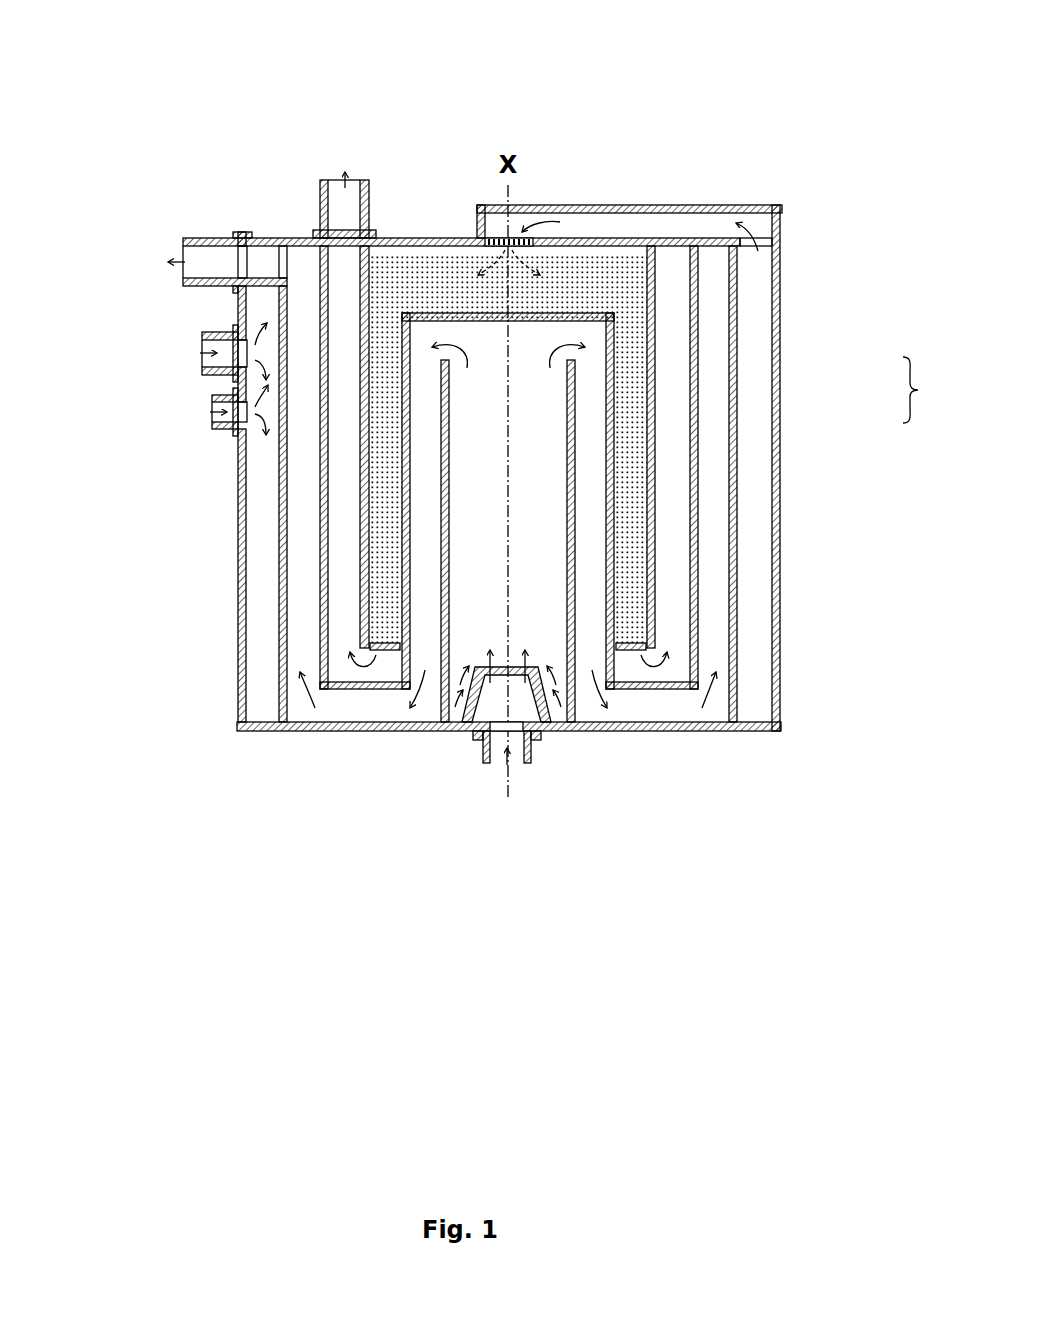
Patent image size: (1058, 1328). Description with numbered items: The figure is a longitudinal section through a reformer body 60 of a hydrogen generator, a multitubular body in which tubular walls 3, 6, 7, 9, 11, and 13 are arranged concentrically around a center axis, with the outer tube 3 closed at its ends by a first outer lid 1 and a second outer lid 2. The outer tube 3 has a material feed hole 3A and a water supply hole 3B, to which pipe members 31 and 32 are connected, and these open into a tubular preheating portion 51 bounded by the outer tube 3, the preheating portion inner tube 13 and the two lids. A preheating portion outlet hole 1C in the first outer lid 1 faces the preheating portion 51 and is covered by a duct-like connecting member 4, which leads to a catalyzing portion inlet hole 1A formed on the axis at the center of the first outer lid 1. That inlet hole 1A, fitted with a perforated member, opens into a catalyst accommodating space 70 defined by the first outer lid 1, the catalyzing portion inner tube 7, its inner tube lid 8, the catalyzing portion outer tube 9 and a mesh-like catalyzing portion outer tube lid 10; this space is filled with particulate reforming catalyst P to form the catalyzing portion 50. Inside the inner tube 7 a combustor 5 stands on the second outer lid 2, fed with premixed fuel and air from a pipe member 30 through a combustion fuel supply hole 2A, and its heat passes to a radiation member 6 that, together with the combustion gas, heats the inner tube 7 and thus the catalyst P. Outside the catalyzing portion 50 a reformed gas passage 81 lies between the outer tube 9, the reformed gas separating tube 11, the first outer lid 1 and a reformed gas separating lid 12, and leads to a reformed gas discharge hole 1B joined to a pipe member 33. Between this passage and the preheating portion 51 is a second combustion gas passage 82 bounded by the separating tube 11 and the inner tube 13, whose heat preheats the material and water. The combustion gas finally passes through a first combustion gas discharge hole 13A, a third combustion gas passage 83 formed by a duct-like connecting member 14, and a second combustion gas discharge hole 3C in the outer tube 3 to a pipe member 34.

The reformer body 60 is at (878, 80).
The first outer lid 1 is at (618, 242).
The catalyzing portion inlet hole 1A is at (495, 238).
The reformed gas discharge hole 1B is at (342, 267).
The preheating portion outlet hole 1C is at (762, 240).
The second outer lid 2 is at (262, 731).
The combustion fuel supply hole 2A is at (514, 731).
The outer tube 3 is at (242, 700).
The material feed hole 3A is at (236, 340).
The water supply hole 3B is at (236, 402).
The second combustion gas discharge hole 3C is at (240, 262).
The connecting member 4 is at (550, 207).
The combustor 5 is at (457, 714).
The radiation member 6 is at (441, 700).
The catalyzing portion inner tube 7 is at (398, 492).
The catalyzing portion inner tube lid 8 is at (640, 300).
The catalyzing portion outer tube 9 is at (365, 538).
The catalyzing portion outer tube lid 10 is at (386, 652).
The reformed gas separating tube 11 is at (322, 583).
The reformed gas separating lid 12 is at (336, 690).
The preheating portion inner tube 13 is at (283, 622).
The first combustion gas discharge hole 13A is at (265, 262).
The connecting member 14 is at (235, 290).
The pipe member 30 is at (476, 742).
The pipe member 31 is at (215, 355).
The pipe member 32 is at (222, 428).
The pipe member 33 is at (370, 205).
The pipe member 34 is at (200, 237).
The catalyzing portion 50 is at (929, 390).
The preheating portion 51 is at (260, 658).
The catalyst accommodating space 70 is at (645, 445).
The reformed gas passage 81 is at (307, 263).
The second combustion gas passage 82 is at (283, 262).
The third combustion gas passage 83 is at (207, 237).
The particulate reforming catalyst P is at (630, 415).